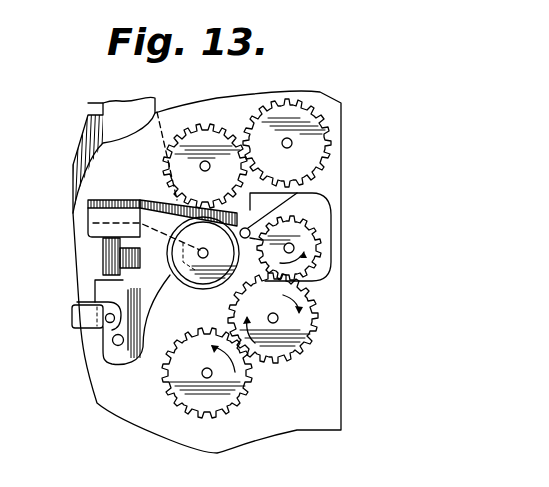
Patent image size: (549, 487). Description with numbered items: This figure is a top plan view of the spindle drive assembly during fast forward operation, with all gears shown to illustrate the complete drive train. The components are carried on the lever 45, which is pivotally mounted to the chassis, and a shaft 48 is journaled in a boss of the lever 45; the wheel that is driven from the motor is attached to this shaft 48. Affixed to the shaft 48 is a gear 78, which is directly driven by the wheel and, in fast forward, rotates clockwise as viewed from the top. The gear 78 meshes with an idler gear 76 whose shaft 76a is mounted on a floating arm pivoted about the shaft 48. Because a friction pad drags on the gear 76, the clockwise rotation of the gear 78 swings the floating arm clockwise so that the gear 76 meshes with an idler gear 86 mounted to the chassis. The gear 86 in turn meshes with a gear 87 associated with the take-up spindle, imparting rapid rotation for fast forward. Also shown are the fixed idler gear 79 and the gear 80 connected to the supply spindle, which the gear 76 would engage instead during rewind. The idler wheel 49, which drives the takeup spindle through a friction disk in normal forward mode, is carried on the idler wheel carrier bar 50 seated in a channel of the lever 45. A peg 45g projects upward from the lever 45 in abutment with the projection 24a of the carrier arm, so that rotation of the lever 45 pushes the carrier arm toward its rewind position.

The lever 45 is at (87, 117).
The gear 80 is at (215, 137).
The fixed idler gear 79 is at (297, 113).
The gear 78 is at (242, 225).
The shaft 48 is at (254, 227).
The idler gear 76 is at (270, 225).
The shaft 76a is at (293, 240).
The idler wheel carrier bar 50 is at (103, 257).
The peg 45g is at (80, 297).
The idler wheel 49 is at (177, 270).
The projection 24a is at (80, 330).
The idler gear 86 is at (287, 338).
The gear 87 is at (230, 403).